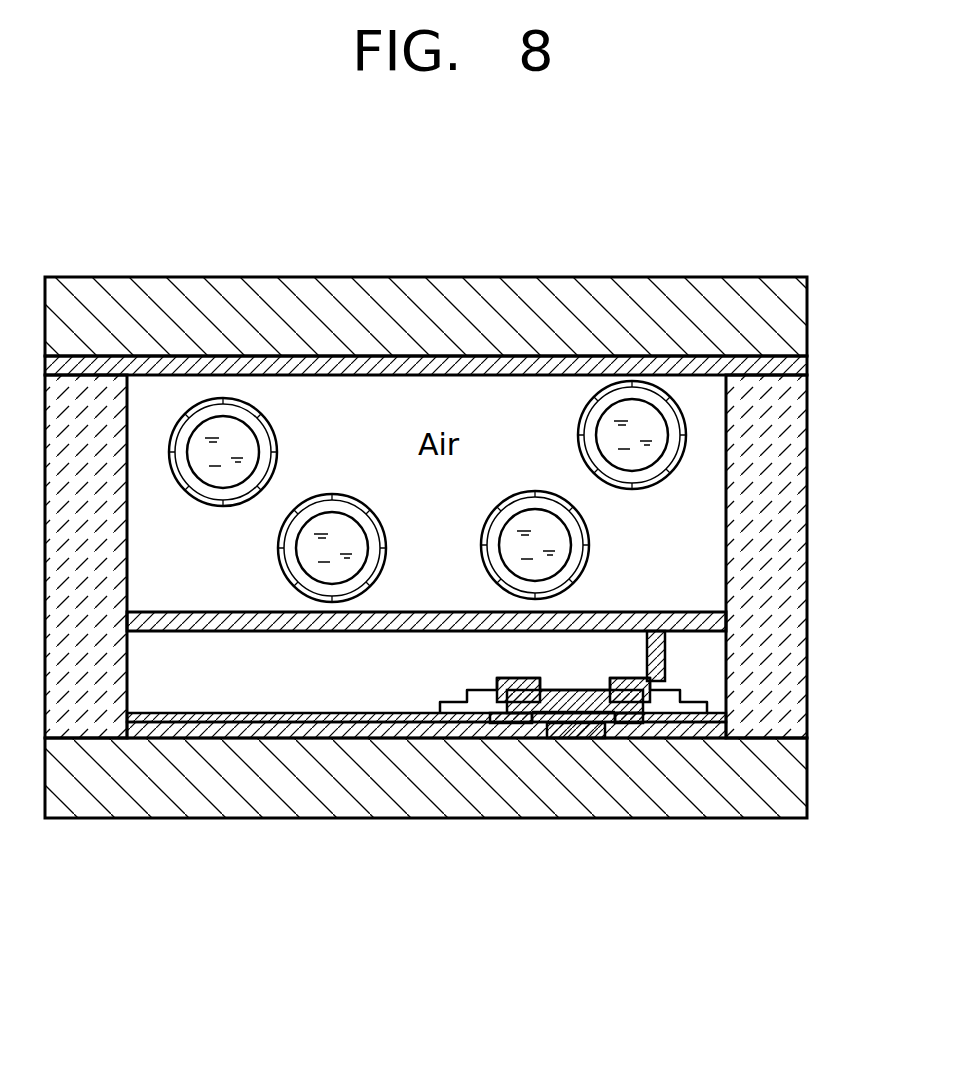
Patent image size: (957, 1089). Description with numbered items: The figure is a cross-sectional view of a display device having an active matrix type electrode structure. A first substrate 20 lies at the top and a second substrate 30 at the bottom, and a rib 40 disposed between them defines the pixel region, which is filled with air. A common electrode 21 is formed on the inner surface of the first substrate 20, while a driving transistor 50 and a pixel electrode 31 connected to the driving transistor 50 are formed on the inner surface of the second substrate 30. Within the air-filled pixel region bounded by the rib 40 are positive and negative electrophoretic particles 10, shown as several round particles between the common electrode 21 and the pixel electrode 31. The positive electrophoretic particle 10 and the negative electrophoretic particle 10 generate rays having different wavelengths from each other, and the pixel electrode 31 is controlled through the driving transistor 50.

The electrophoretic particles 10 is at (170, 398).
The first substrate 20 is at (797, 318).
The common electrode 21 is at (807, 367).
The second substrate 30 is at (797, 772).
The pixel electrode 31 is at (697, 613).
The rib 40 is at (798, 510).
The driving transistor 50 is at (572, 738).